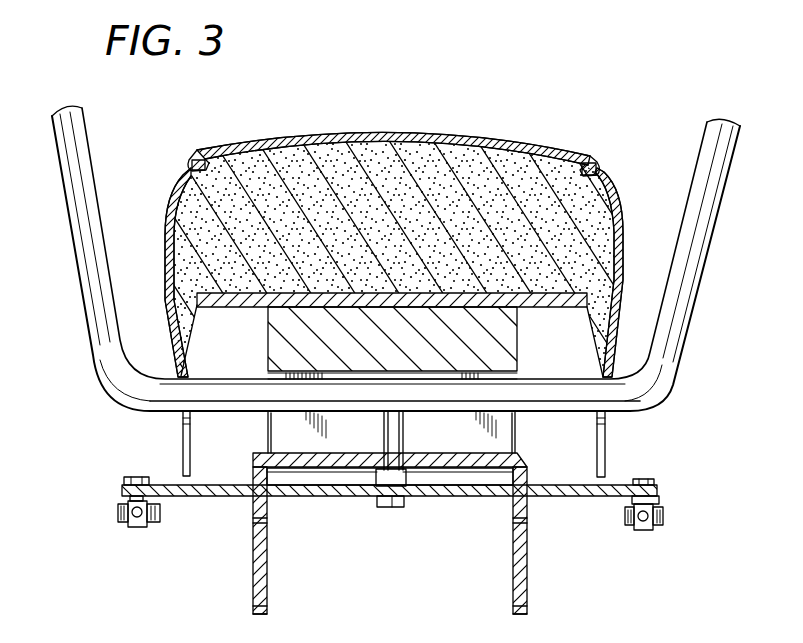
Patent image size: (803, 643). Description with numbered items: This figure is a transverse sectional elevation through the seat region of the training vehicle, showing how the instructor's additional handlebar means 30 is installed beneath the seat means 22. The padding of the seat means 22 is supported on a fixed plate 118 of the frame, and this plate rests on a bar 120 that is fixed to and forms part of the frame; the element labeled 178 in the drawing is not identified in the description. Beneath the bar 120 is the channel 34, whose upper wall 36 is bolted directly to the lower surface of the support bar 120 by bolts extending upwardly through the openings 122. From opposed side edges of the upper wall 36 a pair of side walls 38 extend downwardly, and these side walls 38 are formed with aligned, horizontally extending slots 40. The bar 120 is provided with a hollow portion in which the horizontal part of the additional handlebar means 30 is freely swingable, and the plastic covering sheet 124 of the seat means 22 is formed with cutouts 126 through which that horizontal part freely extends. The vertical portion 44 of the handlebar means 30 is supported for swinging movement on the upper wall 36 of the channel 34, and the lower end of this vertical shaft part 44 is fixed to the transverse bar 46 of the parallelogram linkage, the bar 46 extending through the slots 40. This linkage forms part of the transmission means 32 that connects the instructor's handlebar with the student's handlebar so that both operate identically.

The seat means 22 is at (410, 150).
The additional handlebar means 30 is at (90, 153).
The transmission means 32 is at (658, 523).
The channel 34 is at (528, 571).
The upper wall 36 is at (505, 457).
The side walls 38 is at (268, 610).
The slots 40 is at (267, 521).
The vertical portion of the handlebar means 44 is at (403, 431).
The transverse bar 46 is at (556, 492).
The fixed plate 118 is at (400, 269).
The bar 120 is at (500, 355).
The openings 122 is at (278, 426).
The plastic covering sheet 124 is at (619, 245).
The cutouts 126 is at (606, 443).
The base plate 178 is at (268, 302).